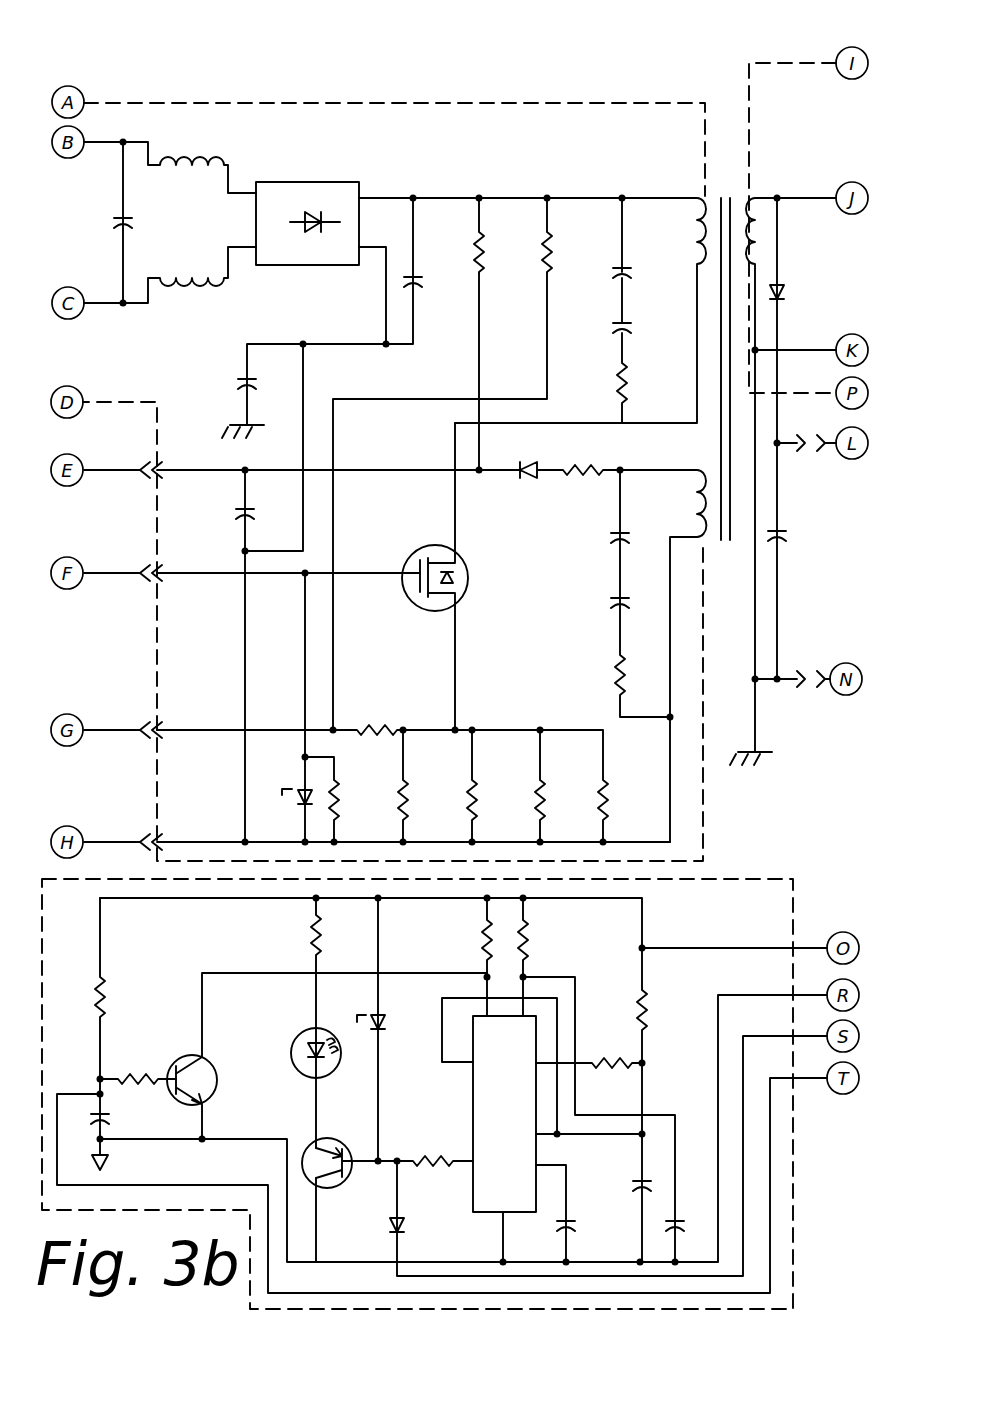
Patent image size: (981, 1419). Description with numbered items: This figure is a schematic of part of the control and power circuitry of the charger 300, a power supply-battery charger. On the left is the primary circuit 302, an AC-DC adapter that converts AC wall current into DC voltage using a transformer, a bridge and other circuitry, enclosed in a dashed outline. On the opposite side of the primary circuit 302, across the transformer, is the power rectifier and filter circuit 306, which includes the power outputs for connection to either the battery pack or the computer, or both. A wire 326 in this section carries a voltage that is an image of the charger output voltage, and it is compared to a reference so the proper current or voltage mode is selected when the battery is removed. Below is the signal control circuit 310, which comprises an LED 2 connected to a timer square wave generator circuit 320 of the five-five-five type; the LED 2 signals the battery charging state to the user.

The charger 300 is at (236, 60).
The primary circuit 302 is at (155, 102).
The power rectifier and filter circuit 306 is at (787, 63).
The signal control circuit 310 is at (736, 881).
The 555 timer square wave generator circuit 320 is at (471, 1097).
The wire 326 is at (802, 452).
The LED 2 LED2 is at (299, 1034).